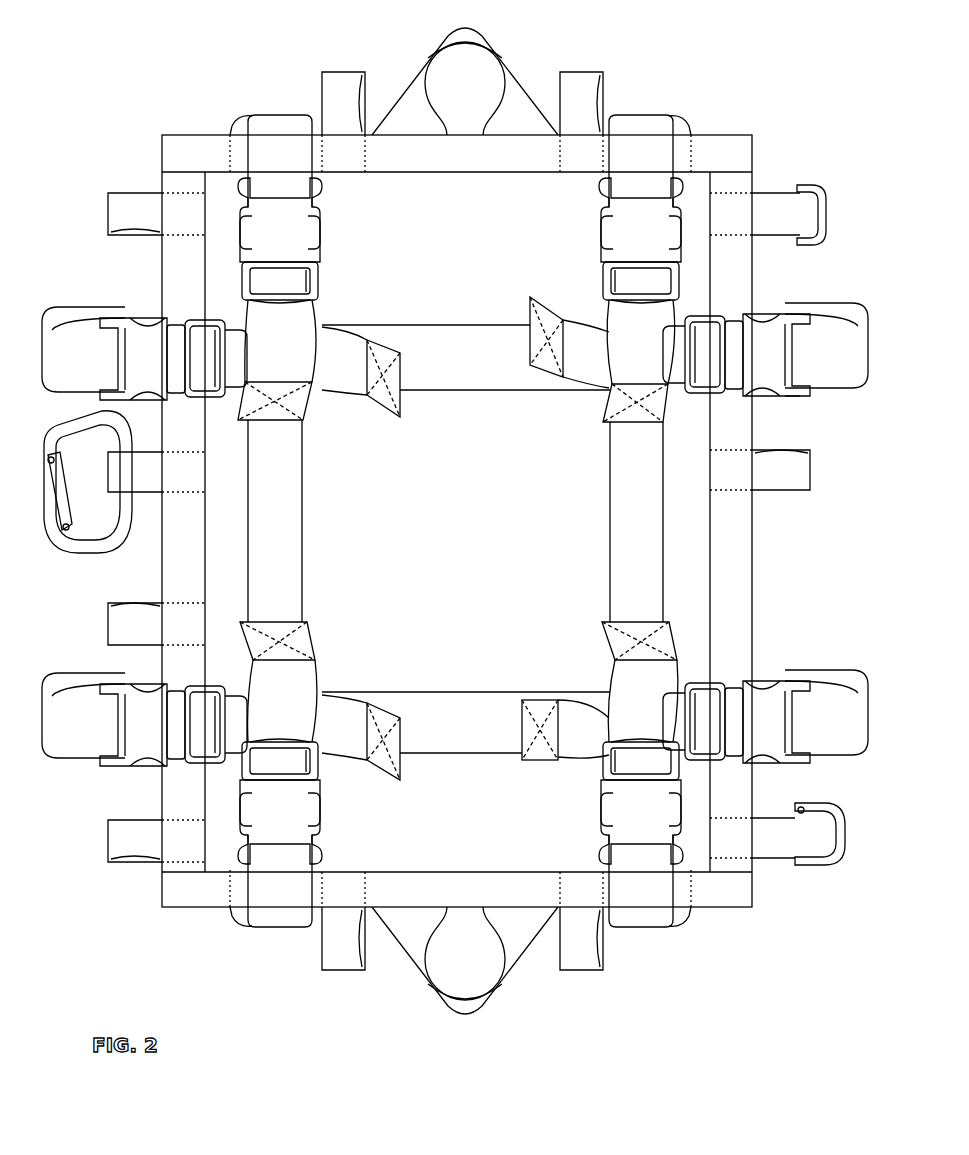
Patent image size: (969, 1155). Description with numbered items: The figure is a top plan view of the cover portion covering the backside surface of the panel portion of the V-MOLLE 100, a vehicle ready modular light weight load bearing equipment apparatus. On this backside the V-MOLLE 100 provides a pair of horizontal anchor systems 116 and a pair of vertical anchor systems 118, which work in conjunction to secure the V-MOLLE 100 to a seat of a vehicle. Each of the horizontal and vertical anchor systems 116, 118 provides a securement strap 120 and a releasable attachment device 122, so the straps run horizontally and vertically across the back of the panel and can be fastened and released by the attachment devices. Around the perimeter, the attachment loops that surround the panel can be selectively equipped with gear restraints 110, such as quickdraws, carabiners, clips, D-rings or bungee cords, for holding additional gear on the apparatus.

The vehicle ready modular light weight load bearing equipment apparatus (V-MOLLE) 100 is at (178, 40).
The gear restraints 110 is at (814, 196).
The horizontal anchor systems 116 is at (838, 300).
The vertical anchor systems 118 is at (649, 92).
The securement strap 120 is at (530, 390).
The releasable attachment device 122 is at (795, 397).